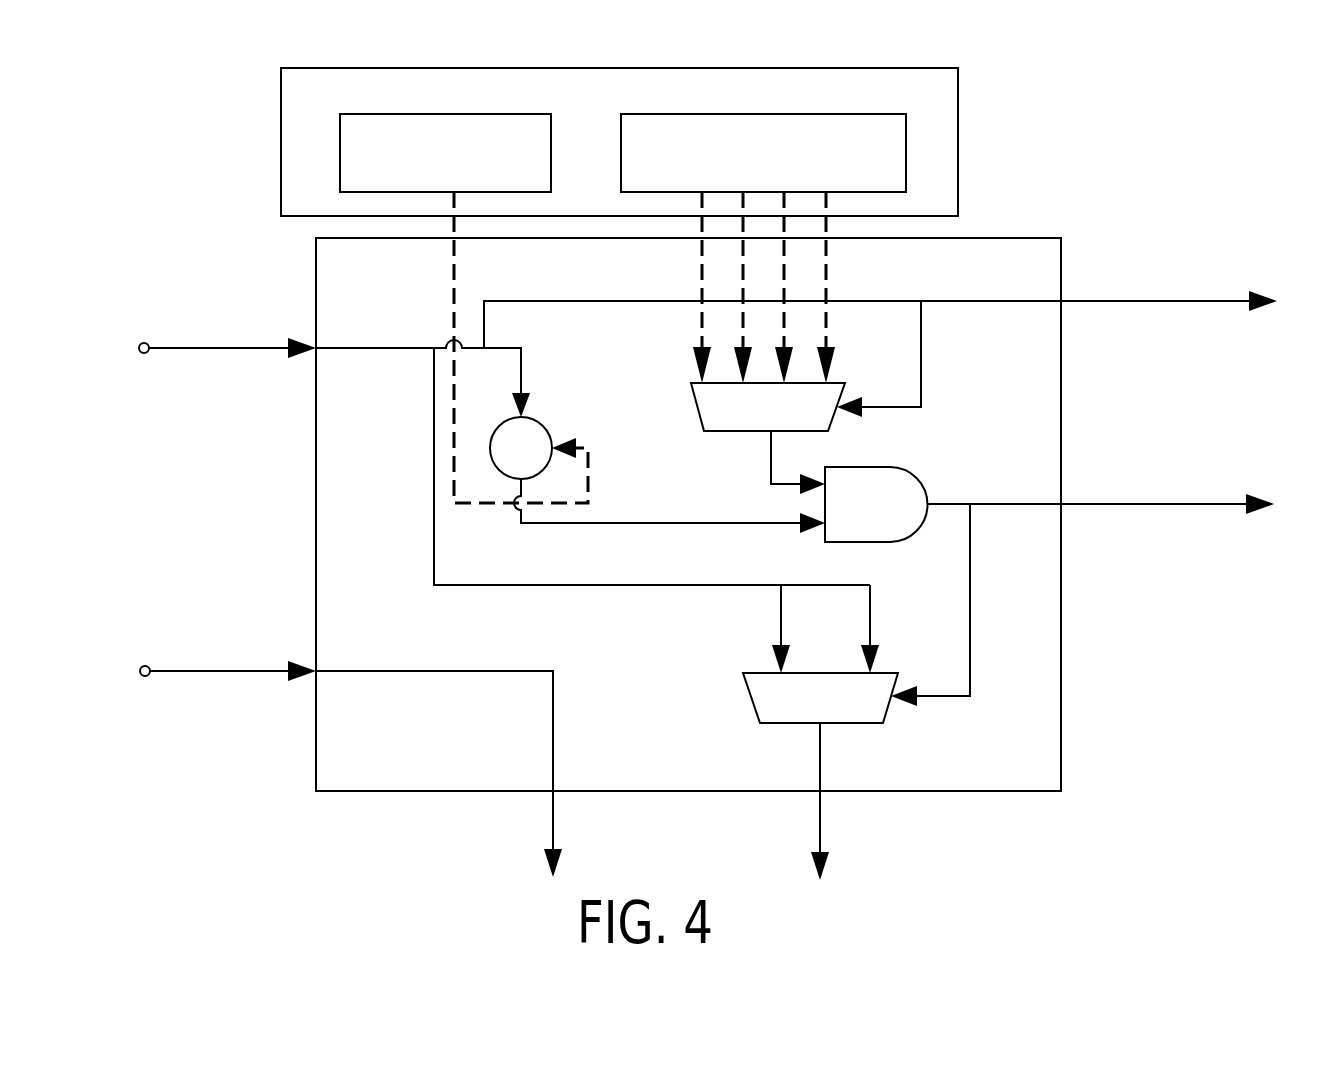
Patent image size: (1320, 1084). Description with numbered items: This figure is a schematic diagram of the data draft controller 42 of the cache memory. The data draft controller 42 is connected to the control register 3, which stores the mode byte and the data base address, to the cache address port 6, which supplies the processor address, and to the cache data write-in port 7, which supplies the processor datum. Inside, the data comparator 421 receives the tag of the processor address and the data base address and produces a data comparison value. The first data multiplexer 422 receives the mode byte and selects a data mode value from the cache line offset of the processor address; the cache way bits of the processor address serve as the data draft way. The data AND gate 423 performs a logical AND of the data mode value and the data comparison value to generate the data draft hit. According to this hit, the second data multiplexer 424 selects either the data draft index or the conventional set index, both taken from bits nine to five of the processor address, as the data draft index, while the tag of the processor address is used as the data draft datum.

The control register 3 is at (958, 140).
The data draft controller 42 is at (698, 513).
The cache address port 6 is at (144, 343).
The cache data write-in port 7 is at (145, 677).
The data comparator 421 is at (538, 424).
The first data multiplexer 422 is at (697, 410).
The data AND gate 423 is at (882, 467).
The second data multiplexer 424 is at (752, 700).